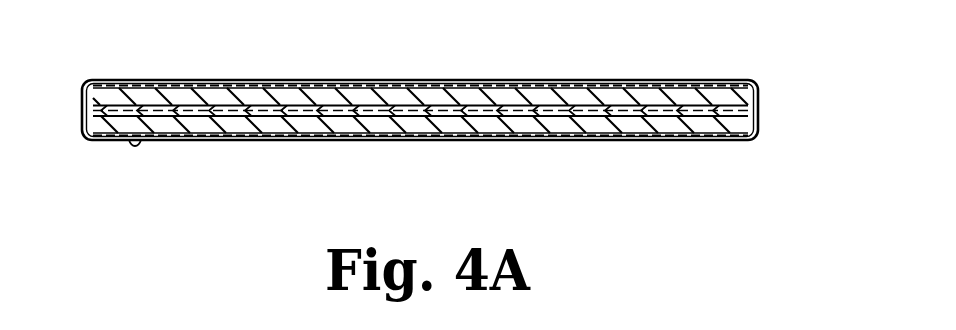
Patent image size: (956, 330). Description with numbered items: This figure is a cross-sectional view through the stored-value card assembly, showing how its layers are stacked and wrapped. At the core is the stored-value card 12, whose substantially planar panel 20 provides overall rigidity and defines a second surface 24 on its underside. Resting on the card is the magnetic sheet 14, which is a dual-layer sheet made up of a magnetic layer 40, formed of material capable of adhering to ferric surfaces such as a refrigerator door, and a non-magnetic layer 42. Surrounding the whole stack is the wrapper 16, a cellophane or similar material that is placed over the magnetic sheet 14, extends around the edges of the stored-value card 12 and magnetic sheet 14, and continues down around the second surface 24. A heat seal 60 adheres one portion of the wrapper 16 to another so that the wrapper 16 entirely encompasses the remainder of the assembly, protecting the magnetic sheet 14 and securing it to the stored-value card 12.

The stored-value card 12 is at (625, 118).
The magnetic sheet 14 is at (527, 97).
The wrapper 16 is at (232, 81).
The panel 20 is at (682, 127).
The second surface 24 is at (317, 128).
The magnetic layer 40 is at (222, 110).
The non-magnetic layer 42 is at (436, 95).
The heat seal 60 is at (135, 146).